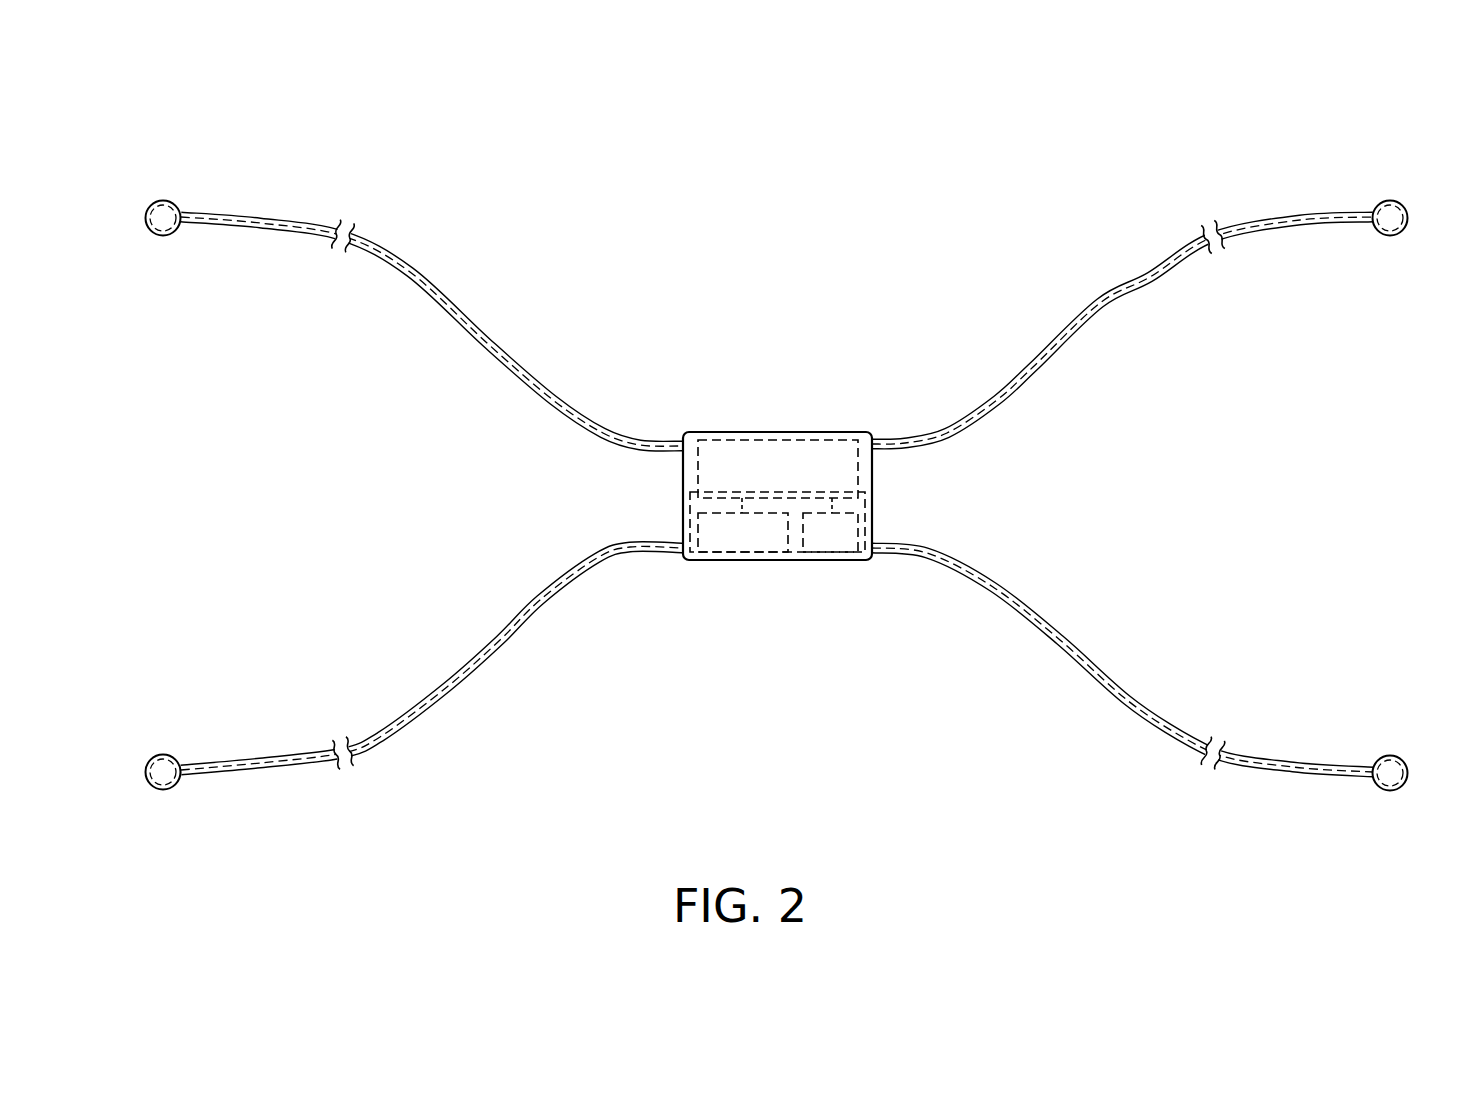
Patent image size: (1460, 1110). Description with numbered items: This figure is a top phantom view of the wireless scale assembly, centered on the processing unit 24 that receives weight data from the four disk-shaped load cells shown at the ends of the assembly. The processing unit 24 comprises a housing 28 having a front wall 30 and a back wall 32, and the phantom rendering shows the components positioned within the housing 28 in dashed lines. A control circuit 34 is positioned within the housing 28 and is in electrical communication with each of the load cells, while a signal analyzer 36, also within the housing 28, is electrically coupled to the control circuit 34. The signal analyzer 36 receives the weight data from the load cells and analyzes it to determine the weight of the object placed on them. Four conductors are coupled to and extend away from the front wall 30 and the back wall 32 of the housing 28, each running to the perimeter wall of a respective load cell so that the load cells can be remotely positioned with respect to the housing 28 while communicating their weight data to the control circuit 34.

The processing unit 24 is at (778, 362).
The housing 28 is at (875, 475).
The front wall 30 is at (875, 510).
The back wall 32 is at (682, 502).
The control circuit 34 is at (698, 462).
The signal analyzer 36 is at (763, 548).